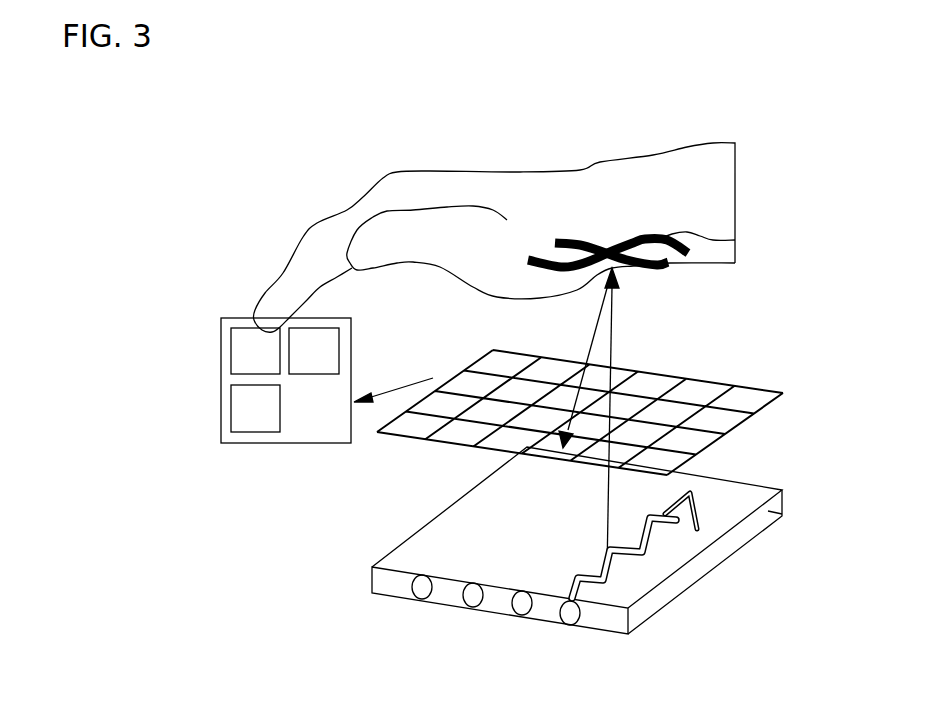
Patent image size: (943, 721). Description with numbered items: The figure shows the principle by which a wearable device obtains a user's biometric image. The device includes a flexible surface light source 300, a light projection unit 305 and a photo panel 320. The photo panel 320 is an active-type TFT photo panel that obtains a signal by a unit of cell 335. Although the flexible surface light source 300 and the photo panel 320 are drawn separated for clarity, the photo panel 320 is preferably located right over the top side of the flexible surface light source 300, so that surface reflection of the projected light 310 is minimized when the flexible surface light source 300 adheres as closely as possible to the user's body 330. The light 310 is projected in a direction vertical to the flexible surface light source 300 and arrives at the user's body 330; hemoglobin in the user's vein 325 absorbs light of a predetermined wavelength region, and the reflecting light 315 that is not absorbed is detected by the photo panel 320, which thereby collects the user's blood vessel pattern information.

The flexible surface light source 300 is at (372, 577).
The light projection unit 305 is at (568, 613).
The projected light 310 is at (611, 313).
The reflecting light 315 is at (592, 328).
The photo panel 320 is at (783, 393).
The user's vein 325 is at (735, 240).
The user's body 330 is at (363, 197).
The cell 335 is at (221, 382).